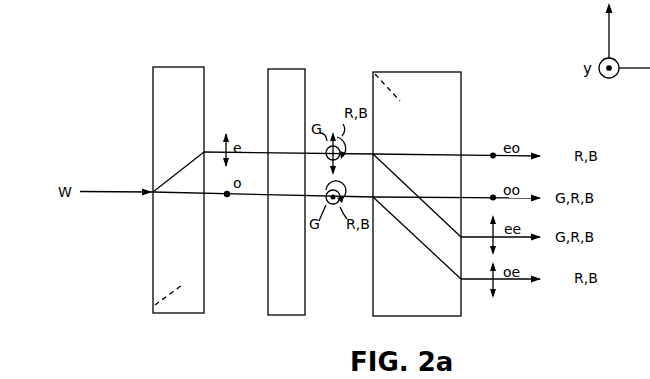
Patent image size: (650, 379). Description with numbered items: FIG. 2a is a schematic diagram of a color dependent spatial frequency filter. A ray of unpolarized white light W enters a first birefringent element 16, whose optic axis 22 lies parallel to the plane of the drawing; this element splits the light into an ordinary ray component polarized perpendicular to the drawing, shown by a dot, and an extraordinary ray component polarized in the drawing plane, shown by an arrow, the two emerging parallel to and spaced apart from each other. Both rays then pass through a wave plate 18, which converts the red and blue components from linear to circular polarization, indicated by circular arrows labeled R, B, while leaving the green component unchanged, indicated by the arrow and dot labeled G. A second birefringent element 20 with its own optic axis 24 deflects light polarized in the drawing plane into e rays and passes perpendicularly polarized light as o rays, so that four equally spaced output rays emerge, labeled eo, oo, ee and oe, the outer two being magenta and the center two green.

The first birefringent element 16 is at (184, 75).
The wave plate 18 is at (287, 76).
The second birefringent element 20 is at (435, 80).
The optic axis 22 is at (168, 306).
The optic axis 24 is at (390, 78).